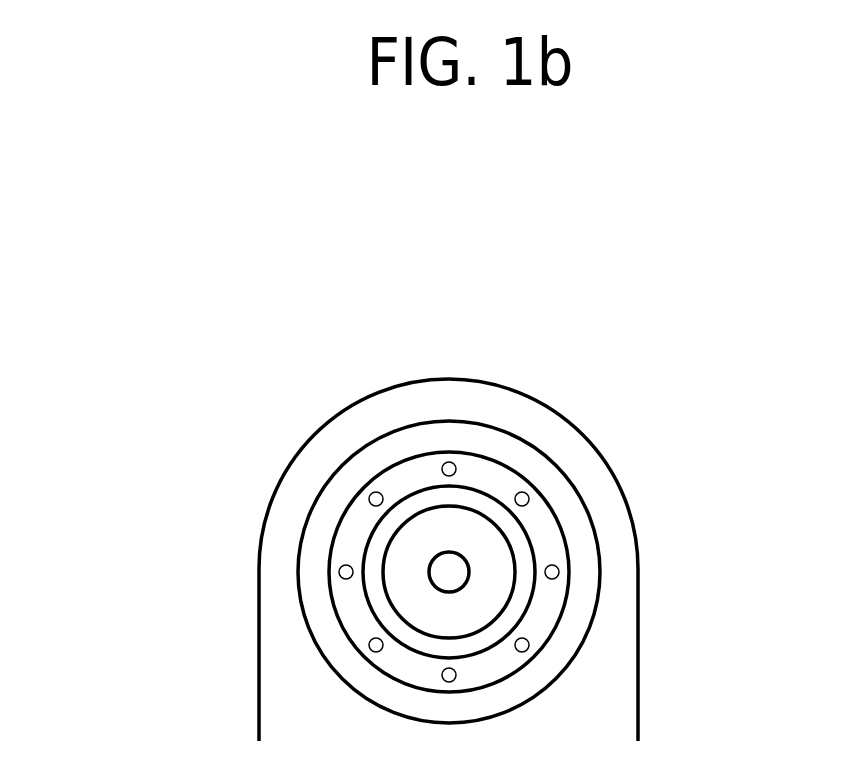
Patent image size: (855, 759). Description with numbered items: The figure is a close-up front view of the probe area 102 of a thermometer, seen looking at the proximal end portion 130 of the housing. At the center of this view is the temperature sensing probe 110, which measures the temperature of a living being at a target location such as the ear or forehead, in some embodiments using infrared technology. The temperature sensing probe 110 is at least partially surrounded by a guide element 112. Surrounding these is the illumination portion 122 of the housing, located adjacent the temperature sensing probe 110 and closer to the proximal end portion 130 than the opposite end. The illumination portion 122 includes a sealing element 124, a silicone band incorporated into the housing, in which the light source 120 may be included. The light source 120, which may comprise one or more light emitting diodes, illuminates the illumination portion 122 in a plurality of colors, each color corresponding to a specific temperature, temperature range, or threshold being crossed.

The probe area 102 is at (138, 363).
The temperature sensing probe 110 is at (462, 572).
The guide element 112 is at (507, 615).
The light source 120 is at (370, 493).
The illumination portion 122 is at (338, 508).
The sealing element 124 is at (403, 468).
The proximal end portion 130 is at (238, 576).